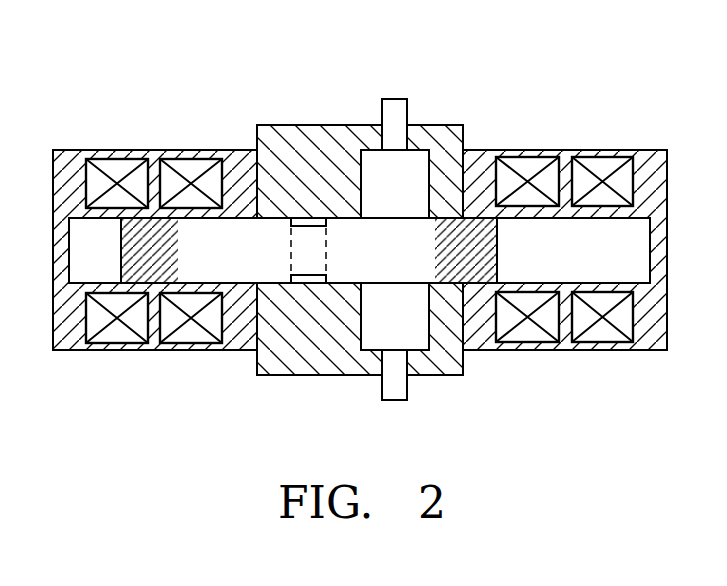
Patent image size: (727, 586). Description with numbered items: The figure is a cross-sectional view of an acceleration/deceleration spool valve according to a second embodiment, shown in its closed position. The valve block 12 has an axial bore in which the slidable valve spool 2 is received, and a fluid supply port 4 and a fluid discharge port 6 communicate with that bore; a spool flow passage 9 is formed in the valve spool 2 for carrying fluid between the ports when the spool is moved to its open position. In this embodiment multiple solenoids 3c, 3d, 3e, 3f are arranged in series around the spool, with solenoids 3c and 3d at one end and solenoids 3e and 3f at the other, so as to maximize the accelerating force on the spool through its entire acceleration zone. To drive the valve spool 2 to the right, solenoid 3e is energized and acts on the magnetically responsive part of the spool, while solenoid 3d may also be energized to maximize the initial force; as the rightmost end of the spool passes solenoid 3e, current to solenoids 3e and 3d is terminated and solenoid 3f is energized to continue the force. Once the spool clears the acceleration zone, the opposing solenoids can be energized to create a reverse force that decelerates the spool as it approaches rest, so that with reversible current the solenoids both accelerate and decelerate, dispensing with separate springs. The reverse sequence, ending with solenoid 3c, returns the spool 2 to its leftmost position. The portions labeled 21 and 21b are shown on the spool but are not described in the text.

The valve spool 2 is at (420, 265).
The solenoid 3c is at (112, 162).
The solenoid 3d is at (197, 162).
The solenoid 3e is at (527, 167).
The solenoid 3f is at (602, 167).
The fluid supply port 4 is at (393, 393).
The fluid discharge port 6 is at (395, 108).
The spool flow passage 9 is at (308, 218).
The valve block 12 is at (440, 135).
The rotor yoke 21 is at (488, 243).
The rotor magnet 21b is at (160, 248).